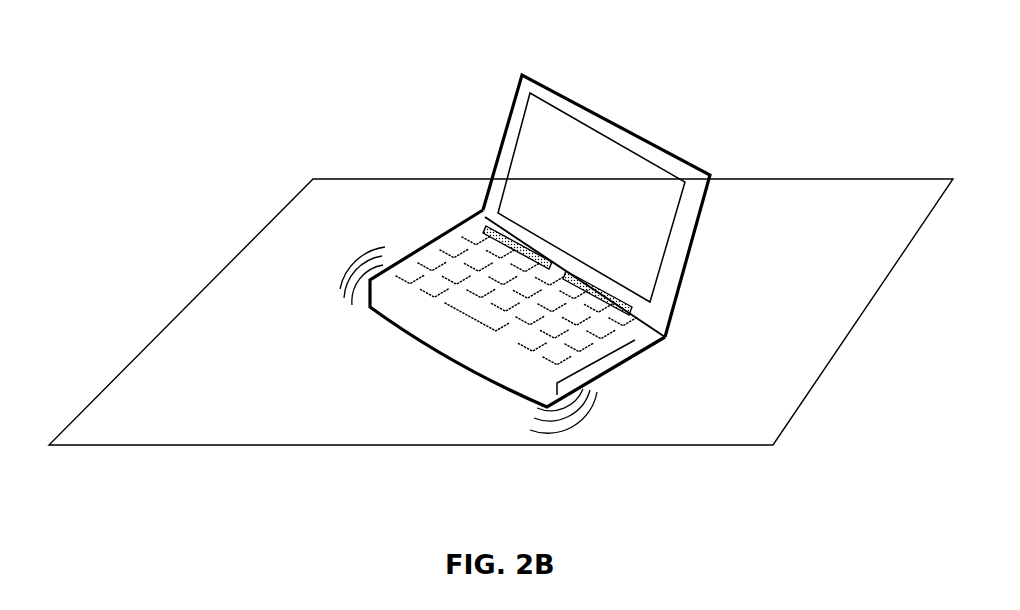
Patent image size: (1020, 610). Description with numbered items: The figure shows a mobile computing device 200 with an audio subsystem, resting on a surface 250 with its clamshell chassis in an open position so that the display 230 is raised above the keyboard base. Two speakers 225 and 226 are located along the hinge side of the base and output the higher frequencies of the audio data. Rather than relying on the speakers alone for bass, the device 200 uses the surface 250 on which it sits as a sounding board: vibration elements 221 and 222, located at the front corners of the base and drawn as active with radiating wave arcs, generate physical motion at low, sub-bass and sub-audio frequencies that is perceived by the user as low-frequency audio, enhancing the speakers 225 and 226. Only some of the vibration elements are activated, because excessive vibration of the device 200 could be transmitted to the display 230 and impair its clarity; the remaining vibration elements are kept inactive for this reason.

The device 200 is at (445, 118).
The vibration element 221 is at (519, 408).
The vibration element 222 is at (361, 318).
The speaker 225 is at (487, 232).
The speaker 226 is at (631, 311).
The display 230 is at (552, 122).
The surface 250 is at (765, 195).